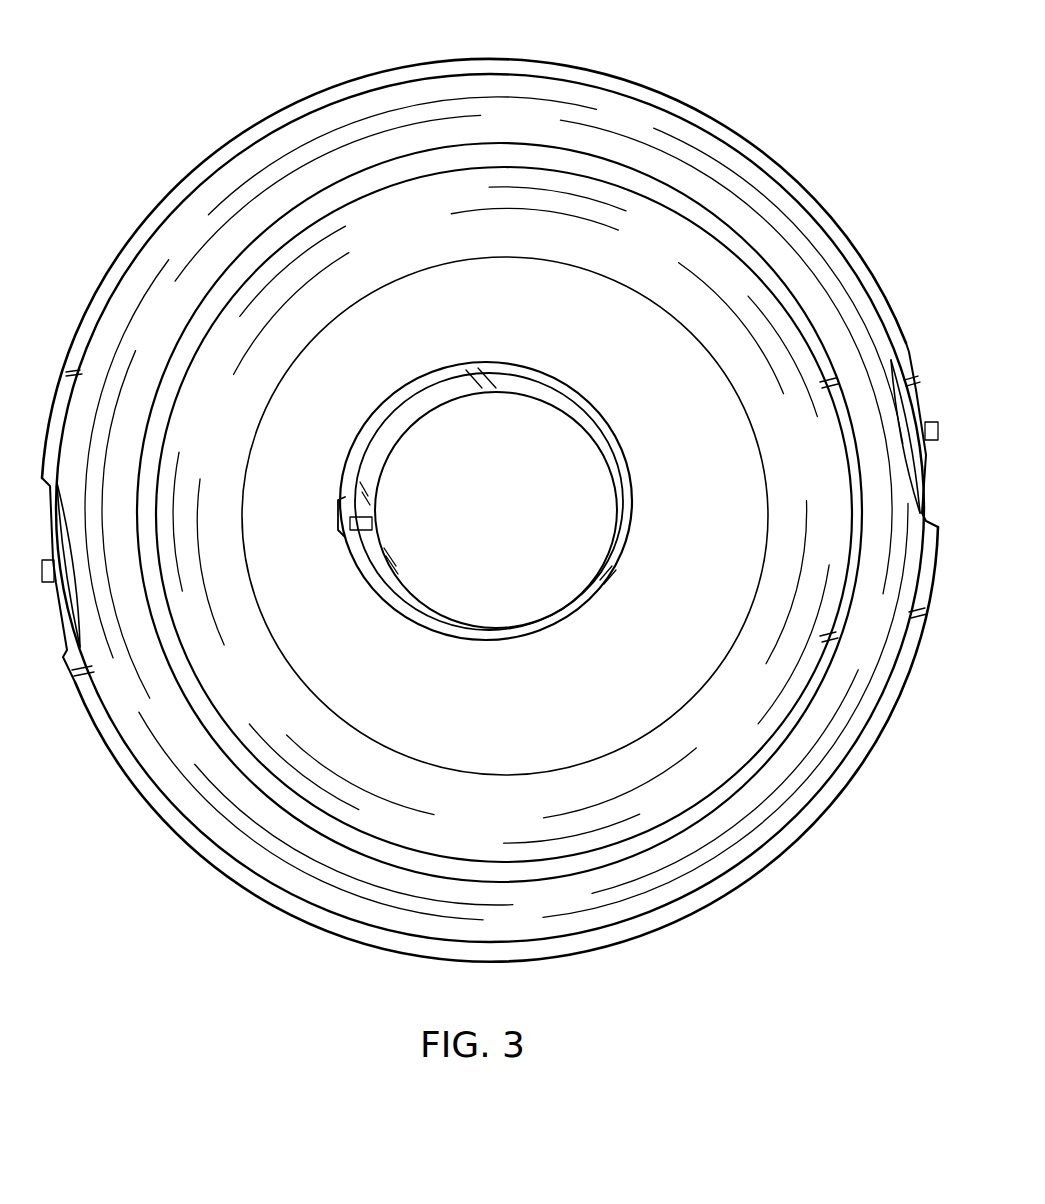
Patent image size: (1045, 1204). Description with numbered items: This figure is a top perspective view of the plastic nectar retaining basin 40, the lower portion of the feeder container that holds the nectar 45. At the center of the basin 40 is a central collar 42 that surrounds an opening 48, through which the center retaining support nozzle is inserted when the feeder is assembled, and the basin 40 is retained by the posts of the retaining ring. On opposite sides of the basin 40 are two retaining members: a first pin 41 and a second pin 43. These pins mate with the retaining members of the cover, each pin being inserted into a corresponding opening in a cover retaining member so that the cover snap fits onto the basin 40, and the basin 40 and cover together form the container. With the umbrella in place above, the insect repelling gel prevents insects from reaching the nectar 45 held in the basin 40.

The nectar retaining basin 40 is at (215, 128).
The first pin 41 is at (47, 584).
The central collar 42 is at (527, 378).
The second pin 43 is at (929, 421).
The nectar 45 is at (600, 800).
The opening 48 is at (372, 466).